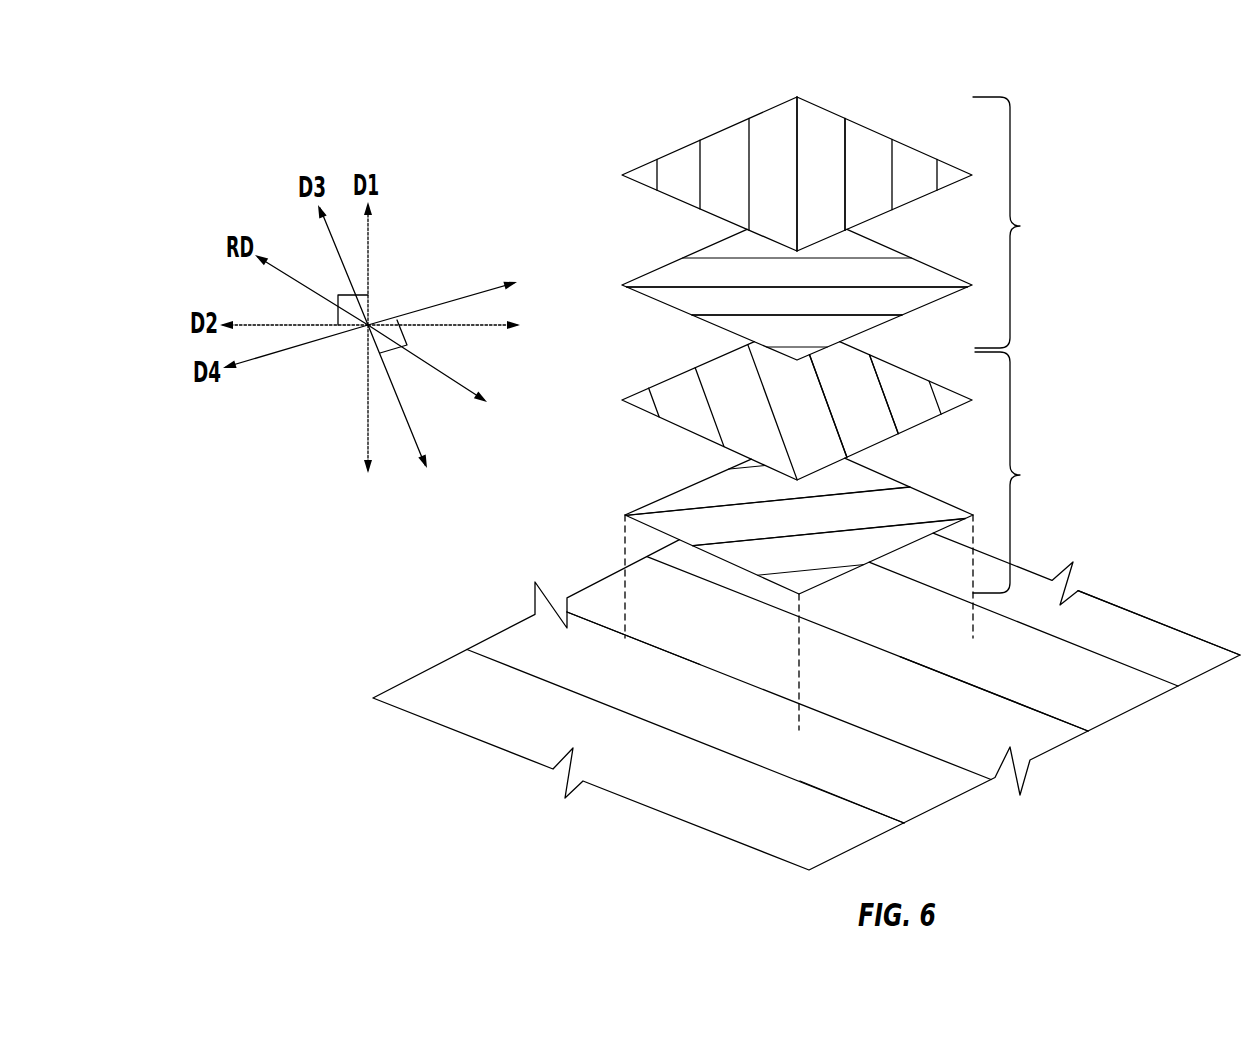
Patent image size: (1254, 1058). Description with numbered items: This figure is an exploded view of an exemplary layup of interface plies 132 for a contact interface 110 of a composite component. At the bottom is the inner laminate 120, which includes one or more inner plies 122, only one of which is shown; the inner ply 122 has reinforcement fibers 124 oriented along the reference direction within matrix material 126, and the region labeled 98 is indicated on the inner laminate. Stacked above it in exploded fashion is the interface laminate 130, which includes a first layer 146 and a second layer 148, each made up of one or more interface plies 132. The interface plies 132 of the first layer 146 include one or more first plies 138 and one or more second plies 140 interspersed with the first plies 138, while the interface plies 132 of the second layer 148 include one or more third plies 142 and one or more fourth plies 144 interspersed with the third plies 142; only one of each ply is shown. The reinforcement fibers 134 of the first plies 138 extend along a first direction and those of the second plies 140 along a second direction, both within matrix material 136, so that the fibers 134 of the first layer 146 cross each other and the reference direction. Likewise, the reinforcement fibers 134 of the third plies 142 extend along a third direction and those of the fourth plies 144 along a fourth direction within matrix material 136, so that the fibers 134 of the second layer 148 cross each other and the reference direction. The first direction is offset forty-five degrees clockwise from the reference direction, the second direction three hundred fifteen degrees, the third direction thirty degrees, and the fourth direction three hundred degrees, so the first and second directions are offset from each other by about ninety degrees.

The surface region of base plate 98 is at (723, 626).
The contact interface 110 is at (1142, 109).
The inner laminate 120 is at (459, 604).
The inner plies 122 is at (1186, 633).
The reinforcement fibers 124 is at (1041, 713).
The matrix material 126 is at (904, 781).
The interface laminate 130 is at (1098, 373).
The interface plies 132 is at (568, 165).
The reinforcement fibers 134 is at (845, 150).
The matrix material 136 is at (819, 149).
The first plies 138 is at (716, 134).
The second plies 140 is at (670, 263).
The third plies 142 is at (674, 377).
The fourth plies 144 is at (690, 486).
The first layer 146 is at (1017, 222).
The second layer 148 is at (1019, 472).